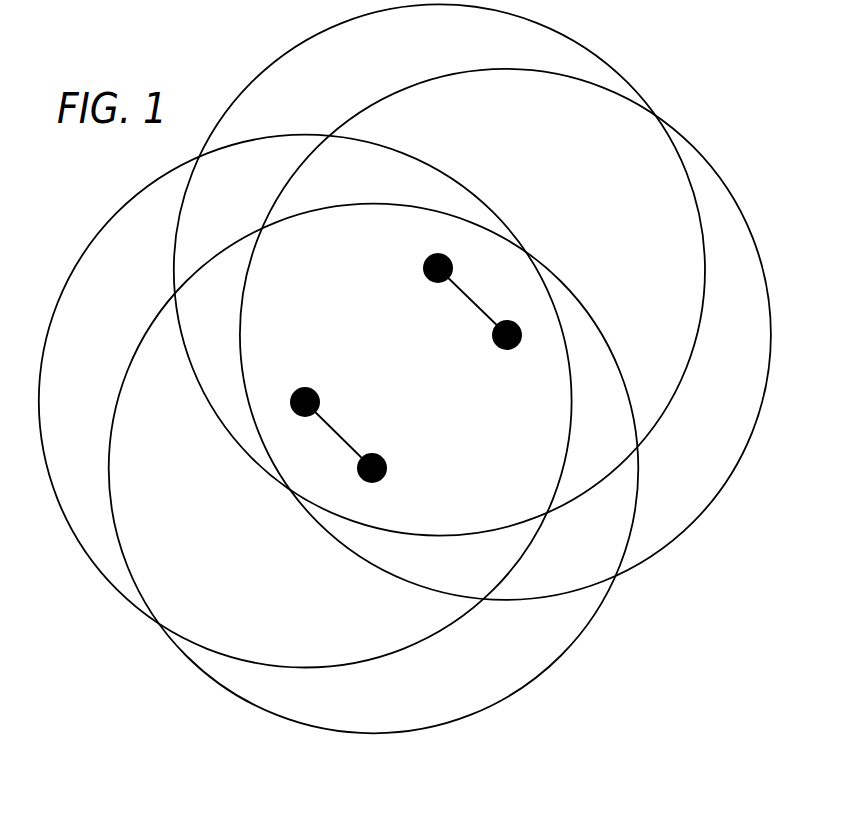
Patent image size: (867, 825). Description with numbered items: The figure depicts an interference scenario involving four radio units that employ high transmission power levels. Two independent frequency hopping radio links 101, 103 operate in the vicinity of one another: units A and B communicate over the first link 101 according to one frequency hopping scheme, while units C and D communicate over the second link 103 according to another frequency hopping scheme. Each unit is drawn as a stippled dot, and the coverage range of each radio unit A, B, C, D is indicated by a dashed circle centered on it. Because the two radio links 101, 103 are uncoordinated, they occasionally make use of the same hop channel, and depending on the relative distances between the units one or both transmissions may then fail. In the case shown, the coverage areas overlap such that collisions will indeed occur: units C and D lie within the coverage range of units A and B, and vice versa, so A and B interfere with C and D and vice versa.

The frequency hopping radio link 101 is at (342, 437).
The frequency hopping radio link 103 is at (472, 303).
The radio unit A is at (305, 401).
The radio unit B is at (374, 469).
The radio unit C is at (439, 269).
The radio unit D is at (505, 334).